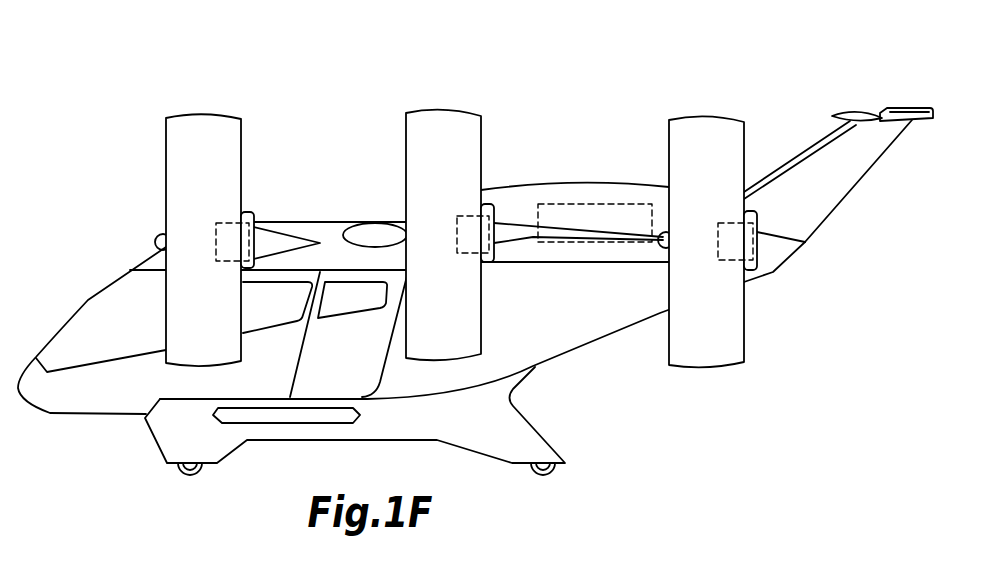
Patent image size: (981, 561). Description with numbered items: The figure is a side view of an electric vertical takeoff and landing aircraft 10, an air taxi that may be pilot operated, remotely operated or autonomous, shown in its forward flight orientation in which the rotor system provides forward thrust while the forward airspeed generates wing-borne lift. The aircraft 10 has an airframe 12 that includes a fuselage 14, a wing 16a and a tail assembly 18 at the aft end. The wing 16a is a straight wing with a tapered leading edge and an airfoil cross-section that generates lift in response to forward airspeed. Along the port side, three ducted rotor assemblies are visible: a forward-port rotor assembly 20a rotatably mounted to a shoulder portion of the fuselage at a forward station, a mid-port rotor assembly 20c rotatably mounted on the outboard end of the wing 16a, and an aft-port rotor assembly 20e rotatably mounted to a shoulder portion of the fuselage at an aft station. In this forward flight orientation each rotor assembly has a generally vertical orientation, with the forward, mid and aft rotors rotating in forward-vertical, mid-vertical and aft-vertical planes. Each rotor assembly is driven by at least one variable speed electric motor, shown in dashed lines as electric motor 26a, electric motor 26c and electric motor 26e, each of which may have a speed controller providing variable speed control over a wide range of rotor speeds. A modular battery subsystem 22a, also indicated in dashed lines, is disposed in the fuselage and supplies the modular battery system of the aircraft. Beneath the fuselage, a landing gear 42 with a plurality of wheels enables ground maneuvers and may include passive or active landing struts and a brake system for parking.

The aircraft 10 is at (578, 90).
The airframe 12 is at (57, 405).
The fuselage 14 is at (72, 407).
The wing 16a is at (360, 233).
The tail assembly 18 is at (852, 167).
The forward-port rotor assembly 20a is at (207, 122).
The mid-port rotor assembly 20c is at (443, 115).
The aft-port rotor assembly 20e is at (708, 125).
The modular battery subsystem 22a is at (600, 208).
The variable speed electric motor 26a is at (232, 222).
The variable speed electric motor 26c is at (467, 215).
The variable speed electric motor 26e is at (732, 223).
The landing gear 42 is at (528, 440).